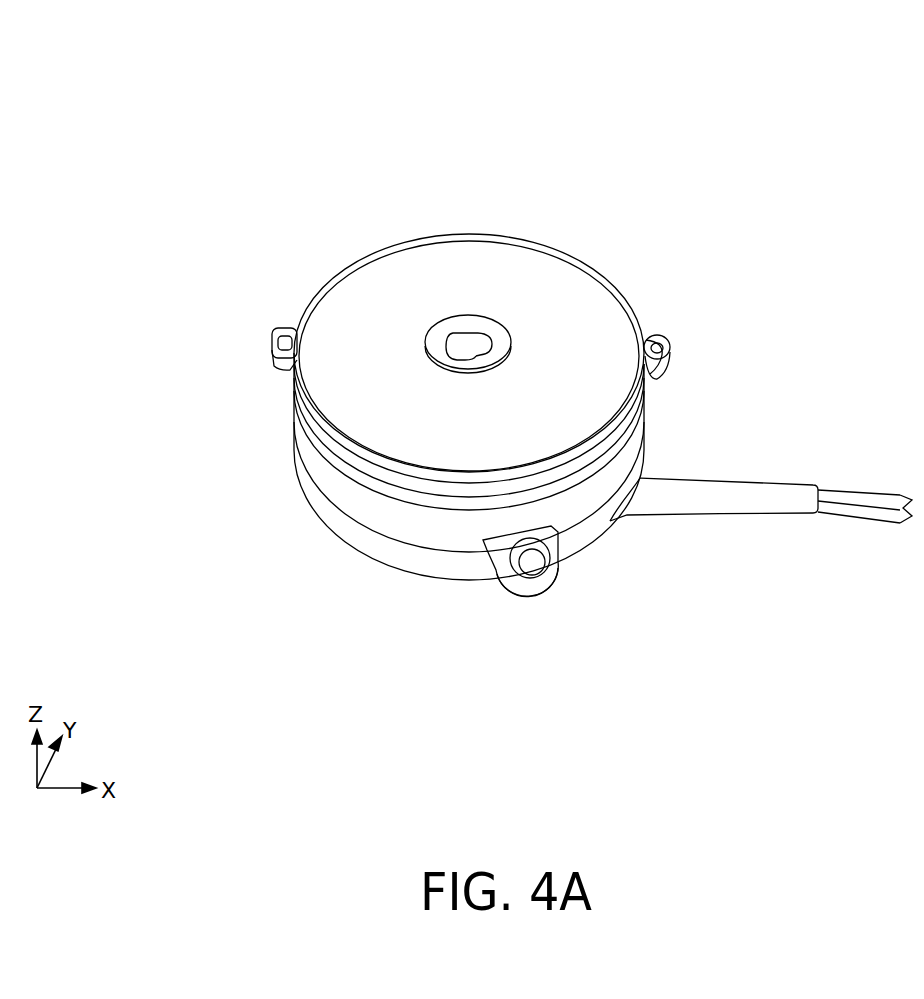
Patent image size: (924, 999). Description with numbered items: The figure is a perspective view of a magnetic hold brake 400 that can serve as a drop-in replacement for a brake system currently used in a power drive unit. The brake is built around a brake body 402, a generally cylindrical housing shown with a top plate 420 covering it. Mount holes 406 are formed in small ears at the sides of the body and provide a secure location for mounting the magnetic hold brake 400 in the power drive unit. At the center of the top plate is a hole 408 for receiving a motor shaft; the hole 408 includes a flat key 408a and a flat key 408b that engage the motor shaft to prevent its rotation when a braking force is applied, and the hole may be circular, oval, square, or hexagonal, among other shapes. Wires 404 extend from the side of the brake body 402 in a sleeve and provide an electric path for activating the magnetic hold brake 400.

The magnetic hold brake 400 is at (260, 91).
The brake body 402 is at (443, 553).
The wires 404 is at (833, 490).
The mount holes 406 is at (270, 343).
The hole 408 is at (433, 291).
The flat key 408a is at (455, 342).
The flat key 408b is at (472, 355).
The cover plate 420 is at (558, 293).